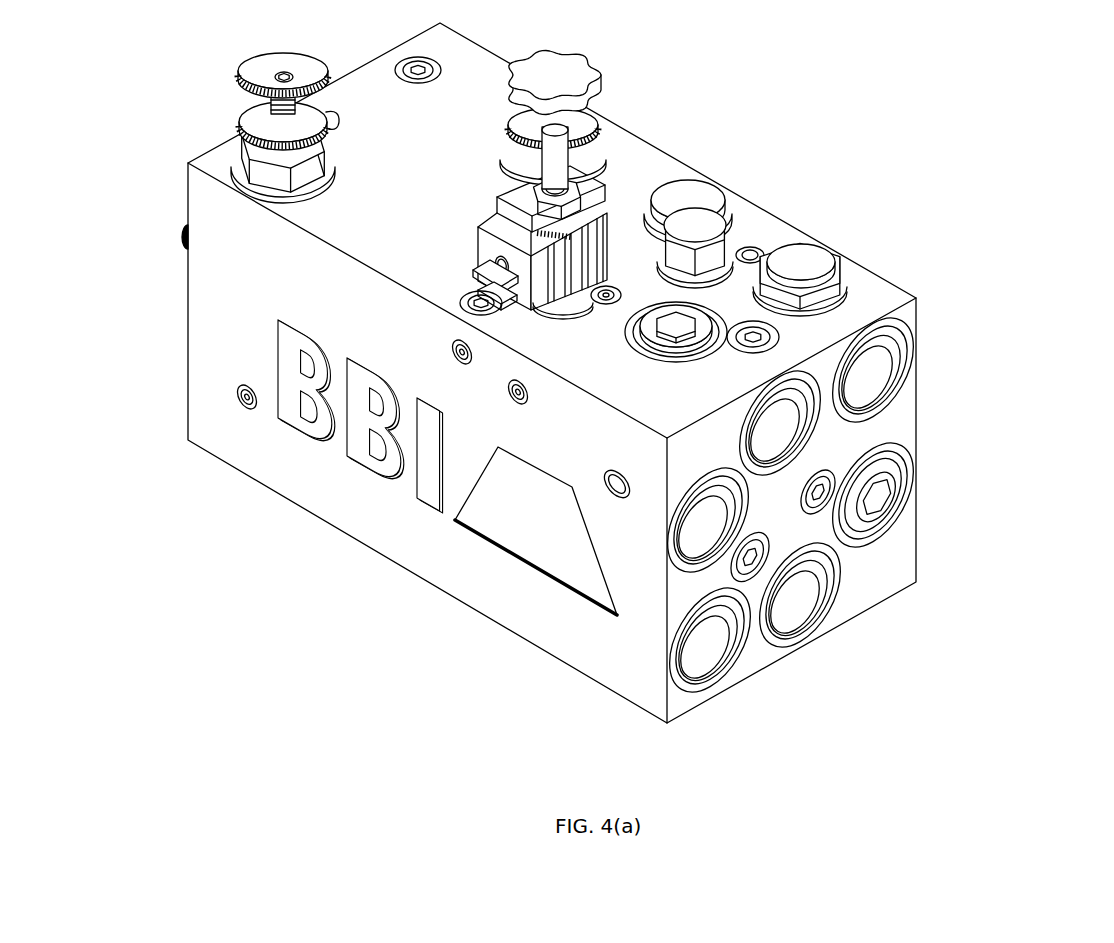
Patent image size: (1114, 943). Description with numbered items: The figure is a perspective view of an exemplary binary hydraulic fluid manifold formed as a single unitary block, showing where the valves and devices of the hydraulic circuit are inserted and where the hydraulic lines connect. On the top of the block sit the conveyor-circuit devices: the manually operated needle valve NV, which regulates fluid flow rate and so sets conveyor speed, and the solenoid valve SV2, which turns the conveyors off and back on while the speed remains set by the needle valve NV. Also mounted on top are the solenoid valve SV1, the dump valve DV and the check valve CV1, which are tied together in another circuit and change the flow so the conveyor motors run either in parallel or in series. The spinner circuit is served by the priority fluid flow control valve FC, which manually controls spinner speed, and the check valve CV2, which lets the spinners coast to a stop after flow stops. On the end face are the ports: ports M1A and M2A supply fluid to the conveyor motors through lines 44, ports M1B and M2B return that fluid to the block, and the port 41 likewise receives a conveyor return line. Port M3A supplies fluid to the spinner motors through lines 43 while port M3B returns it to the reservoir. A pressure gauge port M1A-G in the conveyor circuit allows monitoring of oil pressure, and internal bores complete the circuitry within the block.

The needle valve NV is at (197, 192).
The priority fluid flow control valve FC is at (636, 135).
The solenoid valve SV1 is at (553, 470).
The solenoid valve SV2 is at (455, 375).
The check valve CV1 is at (847, 273).
The check valve CV2 is at (729, 191).
The dump valve DV is at (744, 232).
The port M1A is at (613, 588).
The pressure gauge port M1A-G is at (525, 564).
The port M2A is at (946, 366).
The port M2B is at (771, 648).
The conveyor motor ports 44 is at (769, 509).
The port M3A is at (856, 604).
The port M3B is at (941, 495).
The spinner motor ports 43 is at (904, 554).
The port M1B is at (936, 550).
The port 41 is at (936, 550).